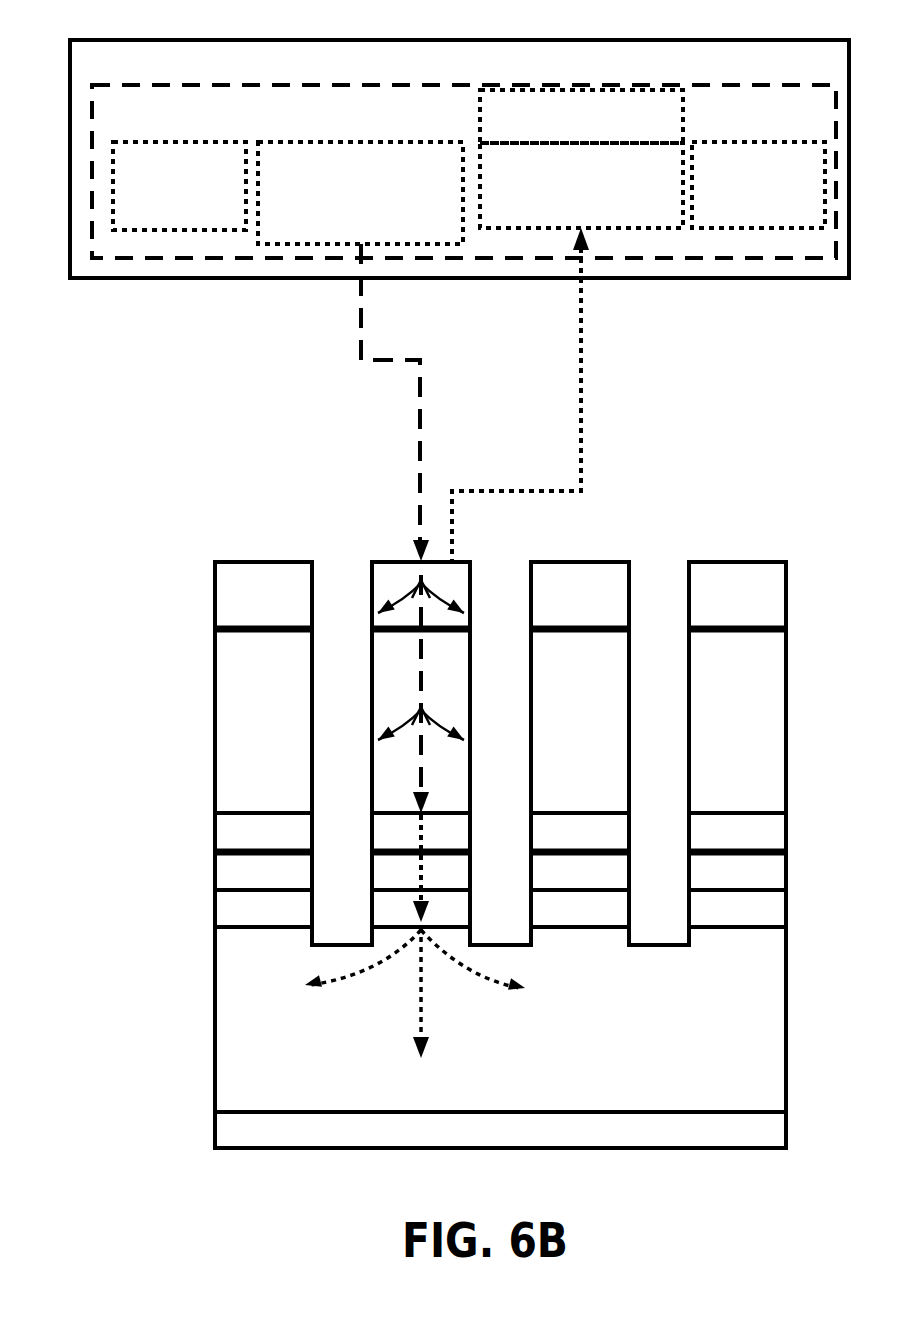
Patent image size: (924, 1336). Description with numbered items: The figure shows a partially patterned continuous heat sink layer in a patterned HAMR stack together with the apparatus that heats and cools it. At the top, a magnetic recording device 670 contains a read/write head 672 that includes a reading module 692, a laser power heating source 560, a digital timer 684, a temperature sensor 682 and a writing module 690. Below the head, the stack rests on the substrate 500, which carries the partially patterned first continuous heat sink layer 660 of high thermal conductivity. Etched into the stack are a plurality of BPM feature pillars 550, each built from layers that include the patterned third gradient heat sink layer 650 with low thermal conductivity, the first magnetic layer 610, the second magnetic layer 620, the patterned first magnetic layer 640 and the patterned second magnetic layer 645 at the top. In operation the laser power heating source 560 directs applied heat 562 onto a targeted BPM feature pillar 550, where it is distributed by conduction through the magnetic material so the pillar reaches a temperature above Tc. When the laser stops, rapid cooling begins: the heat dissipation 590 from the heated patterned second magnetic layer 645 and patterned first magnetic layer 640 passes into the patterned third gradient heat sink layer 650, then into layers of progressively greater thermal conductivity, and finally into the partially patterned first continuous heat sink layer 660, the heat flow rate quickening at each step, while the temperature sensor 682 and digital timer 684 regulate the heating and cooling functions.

The magnetic recording device 670 is at (85, 58).
The read/write head 672 is at (100, 107).
The reading module 692 is at (125, 218).
The laser power heating source 560 is at (288, 220).
The digital timer 684 is at (674, 98).
The temperature sensor 682 is at (643, 218).
The writing module 690 is at (810, 220).
The applied heat 562 is at (418, 423).
The BPM feature pillar (dot) 550 is at (372, 560).
The patterned second magnetic layer 645 is at (395, 595).
The patterned first magnetic layer 640 is at (395, 665).
The first magnetic layer 610 is at (388, 830).
The patterned third gradient heat sink layer 650 is at (382, 878).
The second magnetic layer 620 is at (388, 917).
The heat dissipation 590 is at (422, 905).
The partially patterned first continuous heat sink layer 660 is at (762, 1057).
The substrate 500 is at (770, 1125).